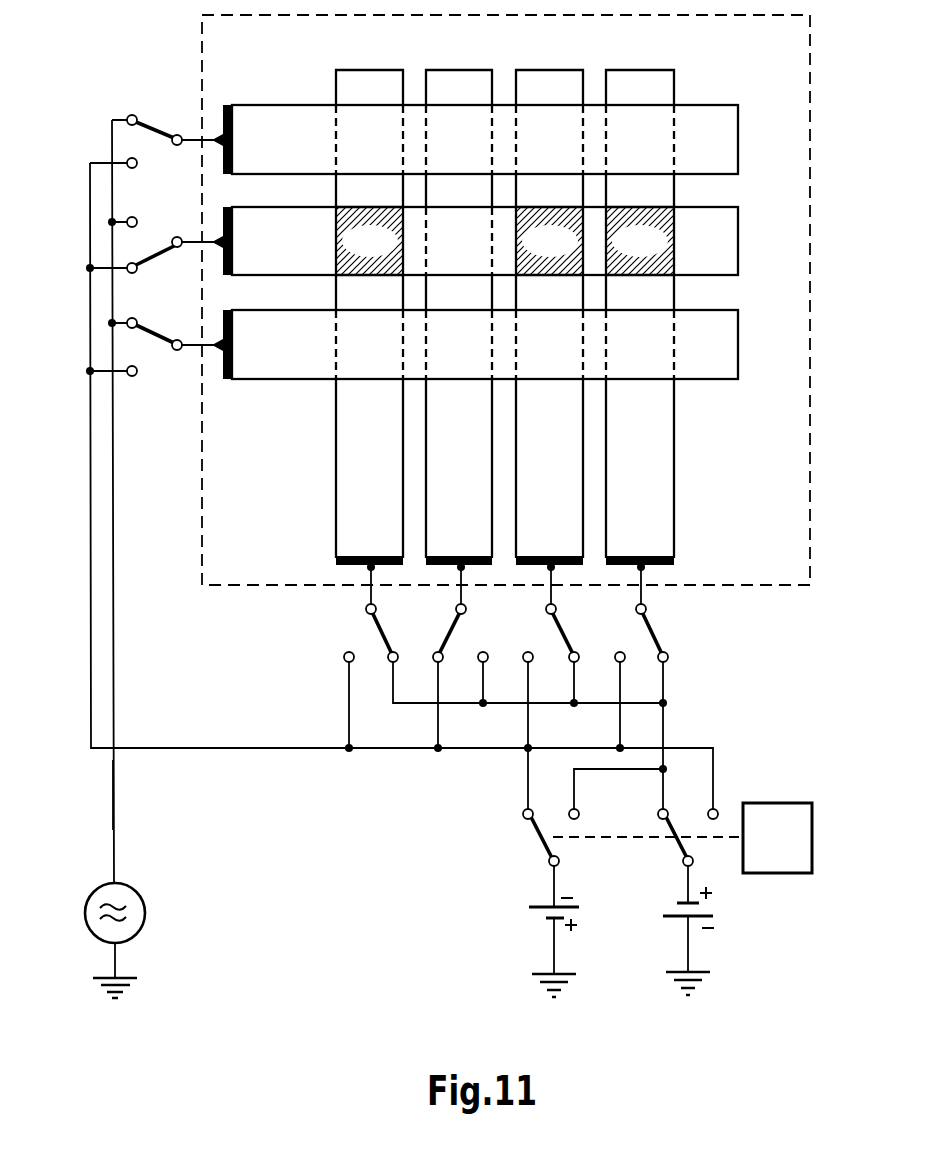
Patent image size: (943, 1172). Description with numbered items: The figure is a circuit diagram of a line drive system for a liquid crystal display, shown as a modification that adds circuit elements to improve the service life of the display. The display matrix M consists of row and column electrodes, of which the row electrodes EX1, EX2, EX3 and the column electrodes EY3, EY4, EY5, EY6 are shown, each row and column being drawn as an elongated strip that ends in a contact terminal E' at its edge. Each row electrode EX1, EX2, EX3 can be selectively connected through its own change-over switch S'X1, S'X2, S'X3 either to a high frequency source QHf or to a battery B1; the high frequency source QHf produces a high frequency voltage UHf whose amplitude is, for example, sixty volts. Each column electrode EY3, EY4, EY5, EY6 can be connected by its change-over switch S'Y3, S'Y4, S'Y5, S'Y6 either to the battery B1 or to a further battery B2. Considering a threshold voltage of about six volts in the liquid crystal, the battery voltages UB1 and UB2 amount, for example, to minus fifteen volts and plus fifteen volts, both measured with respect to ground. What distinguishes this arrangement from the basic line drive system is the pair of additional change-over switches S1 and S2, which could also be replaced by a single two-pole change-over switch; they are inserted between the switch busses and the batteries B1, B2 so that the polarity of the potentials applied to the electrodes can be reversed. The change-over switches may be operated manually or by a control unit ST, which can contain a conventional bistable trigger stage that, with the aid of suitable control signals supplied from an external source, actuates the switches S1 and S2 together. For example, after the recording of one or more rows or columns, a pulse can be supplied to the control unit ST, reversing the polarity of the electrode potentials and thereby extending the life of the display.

The matrix M is at (806, 469).
The column electrode EY3 is at (363, 77).
The column electrode EY4 is at (451, 77).
The column electrode EY5 is at (538, 77).
The column electrode EY6 is at (628, 77).
The row electrode EX1 is at (741, 139).
The row electrode EX2 is at (741, 241).
The row electrode EX3 is at (741, 344).
The electrode contact terminal E' is at (444, 349).
The change-over switch S'X1 is at (156, 126).
The change-over switch S'X2 is at (156, 231).
The change-over switch S'X3 is at (156, 334).
The change-over switch S'Y3 is at (368, 612).
The change-over switch S'Y4 is at (447, 612).
The change-over switch S'Y5 is at (547, 612).
The change-over switch S'Y6 is at (637, 612).
The additional change-over switch S1 is at (547, 843).
The additional change-over switch S2 is at (685, 843).
The control unit ST is at (777, 838).
The battery B1 is at (537, 931).
The further battery B2 is at (670, 930).
The battery voltage UB1 is at (589, 900).
The battery voltage UB2 is at (724, 898).
The high frequency source QHf is at (141, 940).
The high frequency voltage UHf is at (137, 796).